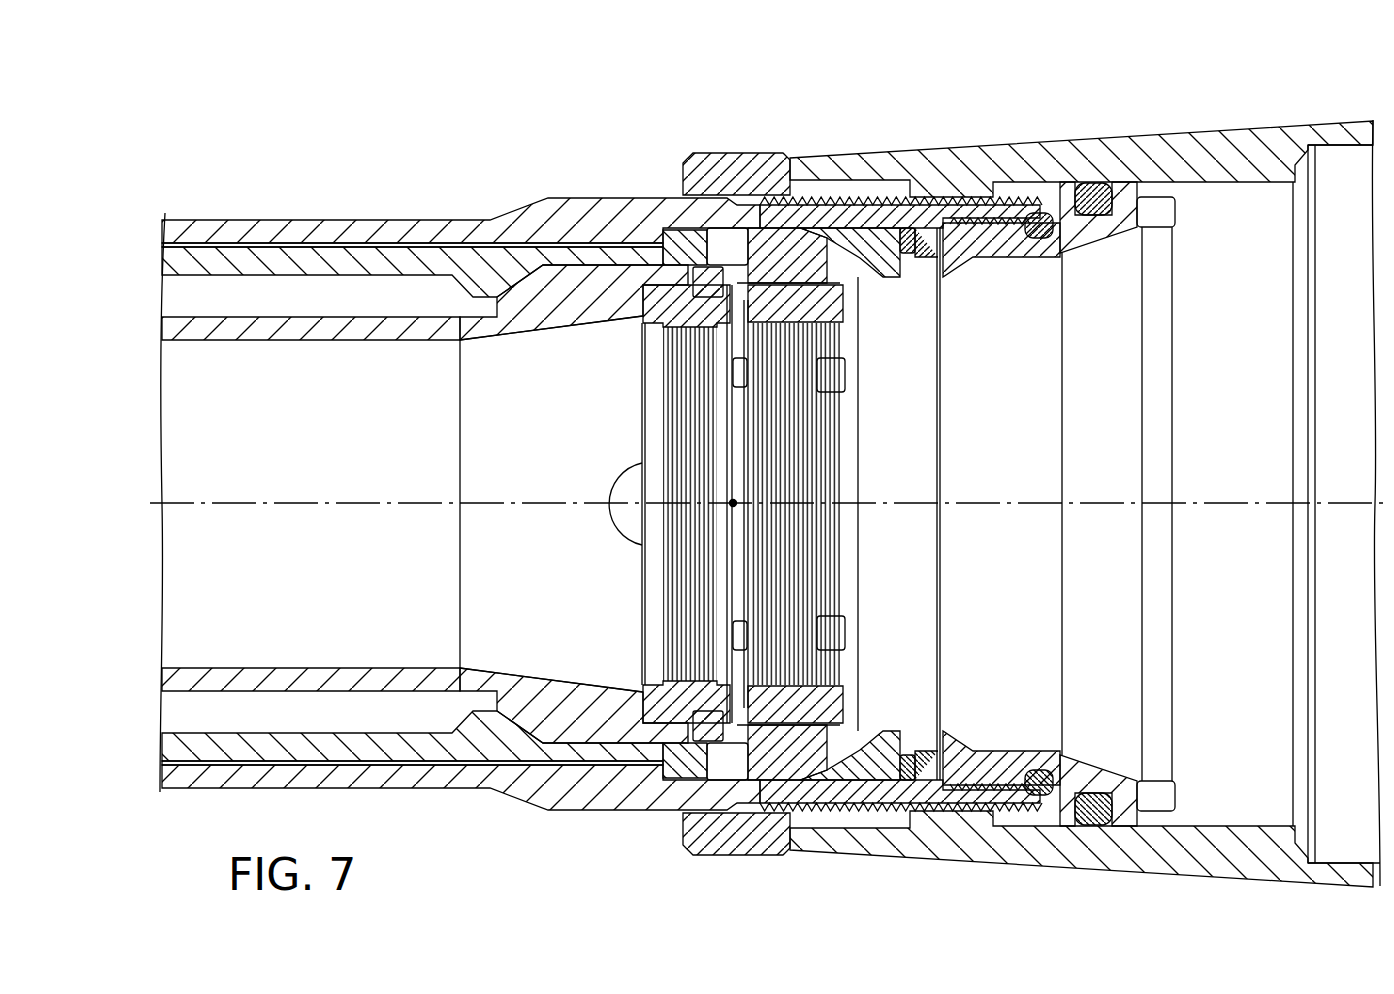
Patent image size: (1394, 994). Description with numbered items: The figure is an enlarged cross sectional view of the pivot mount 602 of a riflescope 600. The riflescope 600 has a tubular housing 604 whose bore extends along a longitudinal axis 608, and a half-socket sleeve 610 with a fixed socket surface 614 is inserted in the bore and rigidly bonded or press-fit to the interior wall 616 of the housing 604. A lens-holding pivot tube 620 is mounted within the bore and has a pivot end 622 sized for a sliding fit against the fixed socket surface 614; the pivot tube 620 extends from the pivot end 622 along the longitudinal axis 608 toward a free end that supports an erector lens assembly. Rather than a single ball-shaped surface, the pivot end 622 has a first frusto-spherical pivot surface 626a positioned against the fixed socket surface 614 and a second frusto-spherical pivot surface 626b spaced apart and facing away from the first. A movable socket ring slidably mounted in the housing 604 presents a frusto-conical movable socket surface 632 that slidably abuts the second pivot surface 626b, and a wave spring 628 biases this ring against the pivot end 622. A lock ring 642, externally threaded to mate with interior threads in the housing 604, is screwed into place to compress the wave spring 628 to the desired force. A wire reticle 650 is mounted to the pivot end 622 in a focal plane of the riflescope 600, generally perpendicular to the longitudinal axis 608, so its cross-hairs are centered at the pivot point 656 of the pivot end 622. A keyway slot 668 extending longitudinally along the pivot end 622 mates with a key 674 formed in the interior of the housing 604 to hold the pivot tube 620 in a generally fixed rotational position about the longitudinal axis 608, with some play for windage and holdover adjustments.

The riflescope 600 is at (1260, 95).
The pivot mount 602 is at (830, 143).
The tubular housing 604 is at (285, 230).
The longitudinal axis 608 is at (1213, 500).
The half-socket sleeve 610 is at (262, 268).
The fixed socket surface 614 is at (515, 283).
The interior wall 616 is at (335, 247).
The lens-holding pivot tube 620 is at (283, 333).
The pivot end 622 is at (768, 245).
The first frusto-spherical pivot surface 626a is at (537, 318).
The second frusto-spherical pivot surface 626b is at (843, 240).
The wave spring 628 is at (915, 225).
The movable socket surface 632 is at (873, 280).
The lock ring 642 is at (1010, 748).
The wire reticle 650 is at (730, 455).
The pivot point 656 is at (733, 504).
The keyway slot 668 is at (753, 762).
The key 674 is at (783, 767).